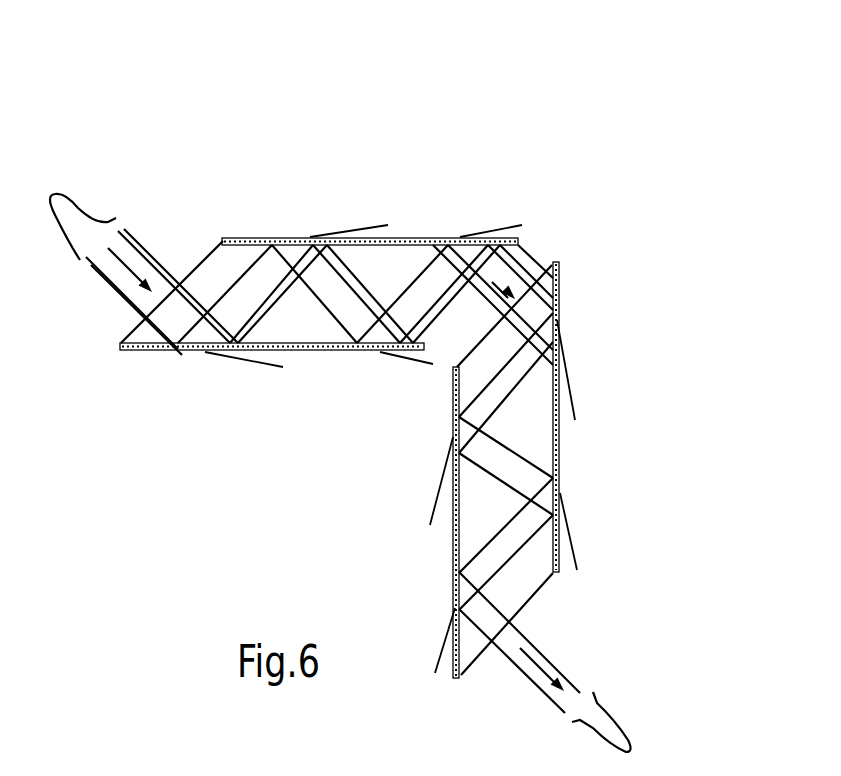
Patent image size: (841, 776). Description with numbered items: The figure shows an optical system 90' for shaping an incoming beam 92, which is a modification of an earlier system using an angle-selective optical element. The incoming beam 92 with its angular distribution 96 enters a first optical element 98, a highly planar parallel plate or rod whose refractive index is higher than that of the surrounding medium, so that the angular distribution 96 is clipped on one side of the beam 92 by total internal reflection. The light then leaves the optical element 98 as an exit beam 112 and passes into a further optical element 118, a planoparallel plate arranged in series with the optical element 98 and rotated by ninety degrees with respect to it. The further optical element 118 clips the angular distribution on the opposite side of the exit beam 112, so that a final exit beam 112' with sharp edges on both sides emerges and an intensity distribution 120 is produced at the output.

The angular distribution 96 is at (86, 181).
The incoming beam 92 is at (163, 243).
The optical system 90' is at (383, 370).
The exit beam 112 is at (578, 248).
The optical element 98 is at (307, 325).
The further optical element 118 is at (533, 441).
The final exit beam 112' is at (603, 608).
The intensity distribution 120 is at (631, 716).